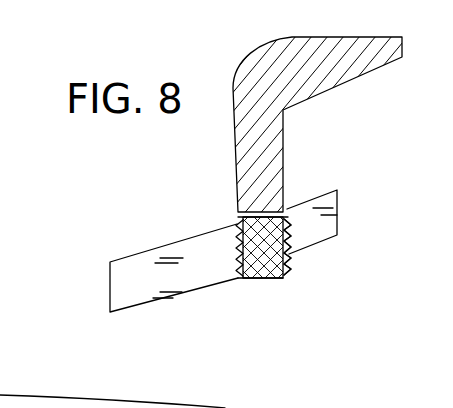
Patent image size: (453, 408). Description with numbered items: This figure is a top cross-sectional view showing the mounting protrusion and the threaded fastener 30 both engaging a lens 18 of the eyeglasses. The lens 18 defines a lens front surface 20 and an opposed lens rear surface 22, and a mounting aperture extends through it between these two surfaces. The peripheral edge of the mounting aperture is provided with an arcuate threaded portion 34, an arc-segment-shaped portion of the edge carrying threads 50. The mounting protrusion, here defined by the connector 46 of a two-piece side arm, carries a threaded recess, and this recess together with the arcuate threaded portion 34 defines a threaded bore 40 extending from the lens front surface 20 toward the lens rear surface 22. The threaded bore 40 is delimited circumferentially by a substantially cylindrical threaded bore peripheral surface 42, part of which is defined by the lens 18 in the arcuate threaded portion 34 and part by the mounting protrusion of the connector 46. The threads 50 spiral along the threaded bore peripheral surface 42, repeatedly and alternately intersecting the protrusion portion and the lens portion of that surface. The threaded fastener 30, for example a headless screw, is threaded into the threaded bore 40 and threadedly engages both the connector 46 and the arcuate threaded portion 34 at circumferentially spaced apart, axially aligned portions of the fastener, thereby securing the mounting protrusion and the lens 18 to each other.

The lens 18 is at (330, 237).
The lens front surface 20 is at (182, 293).
The lens rear surface 22 is at (130, 258).
The threaded fastener 30 is at (263, 257).
The arcuate threaded portion 34 is at (237, 225).
The threaded bore 40 is at (288, 255).
The threaded bore peripheral surface 42 is at (287, 247).
The connector 46 is at (317, 92).
The threads 50 is at (237, 250).